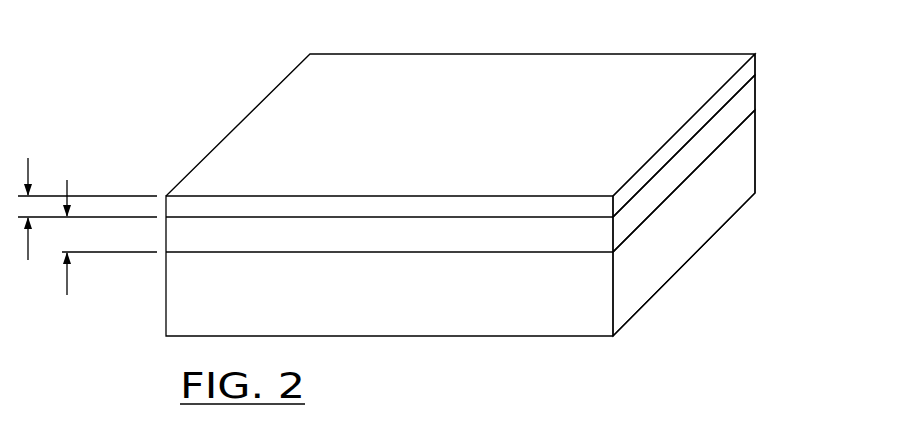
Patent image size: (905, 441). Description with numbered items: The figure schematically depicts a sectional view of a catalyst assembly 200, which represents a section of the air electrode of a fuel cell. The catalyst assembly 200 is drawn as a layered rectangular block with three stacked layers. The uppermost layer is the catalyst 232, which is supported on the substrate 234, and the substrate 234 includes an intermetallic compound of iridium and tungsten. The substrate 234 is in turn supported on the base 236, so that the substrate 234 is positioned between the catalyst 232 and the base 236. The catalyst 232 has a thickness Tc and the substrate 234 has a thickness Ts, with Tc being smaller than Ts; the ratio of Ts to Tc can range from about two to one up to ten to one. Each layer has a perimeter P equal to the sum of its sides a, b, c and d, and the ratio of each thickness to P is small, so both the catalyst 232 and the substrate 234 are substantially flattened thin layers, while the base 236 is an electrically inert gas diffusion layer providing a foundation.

The catalyst assembly 200 is at (142, 88).
The catalyst 232 is at (759, 65).
The substrate 234 is at (759, 91).
The base 236 is at (759, 148).